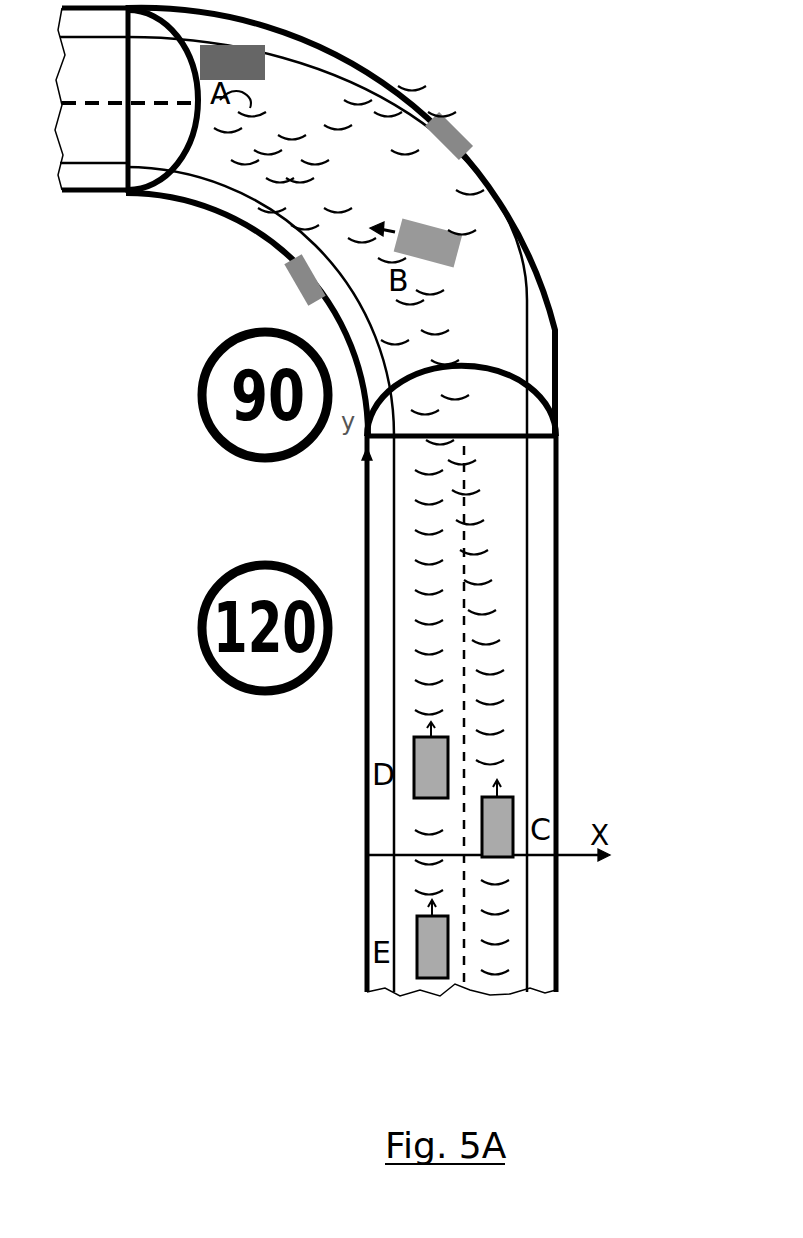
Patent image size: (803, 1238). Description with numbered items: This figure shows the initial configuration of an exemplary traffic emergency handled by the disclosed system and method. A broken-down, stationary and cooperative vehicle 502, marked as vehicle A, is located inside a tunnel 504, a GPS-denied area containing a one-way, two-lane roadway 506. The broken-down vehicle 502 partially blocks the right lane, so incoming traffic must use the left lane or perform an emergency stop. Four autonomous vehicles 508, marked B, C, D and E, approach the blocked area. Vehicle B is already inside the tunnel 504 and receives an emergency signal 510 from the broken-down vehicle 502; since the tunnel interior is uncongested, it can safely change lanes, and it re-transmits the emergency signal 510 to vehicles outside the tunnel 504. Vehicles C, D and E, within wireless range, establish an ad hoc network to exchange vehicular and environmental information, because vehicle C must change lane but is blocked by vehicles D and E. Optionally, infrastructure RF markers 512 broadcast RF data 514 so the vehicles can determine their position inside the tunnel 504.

The broken-down vehicle 502 is at (264, 70).
The tunnel 504 is at (522, 214).
The roadway 506 is at (507, 917).
The autonomous vehicles 508 is at (423, 242).
The emergency signal 510 is at (372, 197).
The infrastructure RF markers 512 is at (447, 137).
The RF data 514 is at (333, 97).